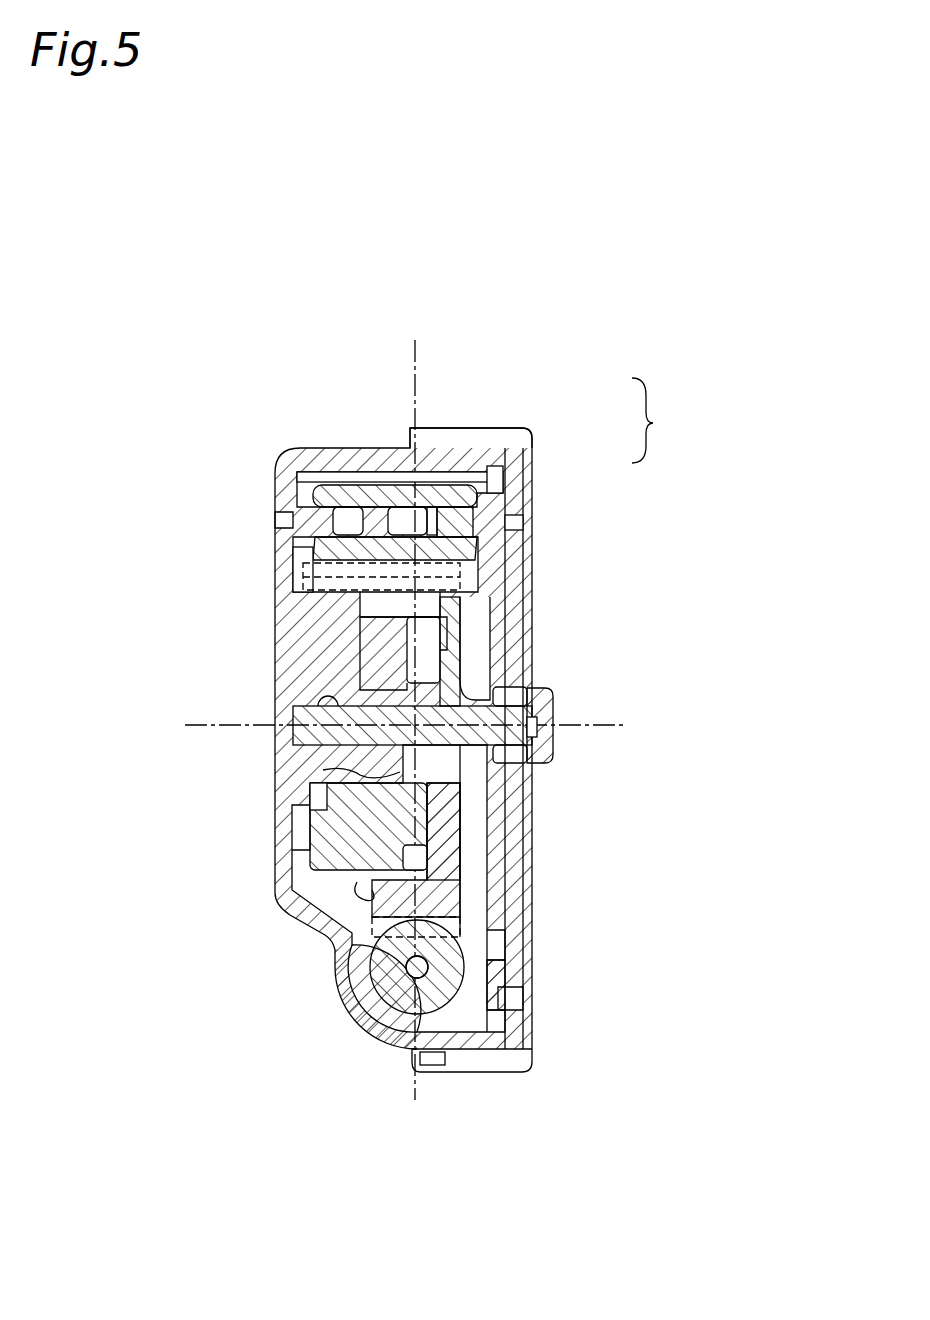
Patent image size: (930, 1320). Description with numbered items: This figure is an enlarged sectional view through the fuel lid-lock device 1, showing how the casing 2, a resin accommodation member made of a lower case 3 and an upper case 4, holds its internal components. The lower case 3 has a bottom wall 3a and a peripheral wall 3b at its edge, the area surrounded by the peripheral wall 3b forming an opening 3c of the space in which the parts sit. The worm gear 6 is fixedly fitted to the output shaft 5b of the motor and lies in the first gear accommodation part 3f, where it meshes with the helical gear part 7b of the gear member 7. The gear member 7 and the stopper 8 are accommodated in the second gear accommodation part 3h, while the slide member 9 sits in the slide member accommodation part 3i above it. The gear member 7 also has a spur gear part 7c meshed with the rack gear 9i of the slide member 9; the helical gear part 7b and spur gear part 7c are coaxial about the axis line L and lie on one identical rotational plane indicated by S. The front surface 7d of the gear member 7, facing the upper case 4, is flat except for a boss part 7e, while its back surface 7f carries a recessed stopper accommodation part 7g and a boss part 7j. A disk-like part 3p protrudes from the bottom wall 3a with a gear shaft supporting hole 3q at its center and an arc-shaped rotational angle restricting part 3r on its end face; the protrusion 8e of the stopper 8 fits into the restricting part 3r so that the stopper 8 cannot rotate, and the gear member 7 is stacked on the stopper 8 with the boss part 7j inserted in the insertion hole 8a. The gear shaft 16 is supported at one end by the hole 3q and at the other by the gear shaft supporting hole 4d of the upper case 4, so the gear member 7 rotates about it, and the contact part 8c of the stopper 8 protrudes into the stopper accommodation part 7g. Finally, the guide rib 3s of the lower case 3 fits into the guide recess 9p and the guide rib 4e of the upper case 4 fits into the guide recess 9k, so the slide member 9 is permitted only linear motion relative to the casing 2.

The fuel lid-lock device 1 is at (702, 256).
The casing 2 is at (654, 420).
The lower case 3 is at (495, 440).
The upper case 4 is at (527, 480).
The slide member accommodation part 3i is at (360, 460).
The guide recess 9k is at (405, 515).
The slide member 9 is at (298, 486).
The guide recess 9p is at (337, 513).
The guide rib 3s is at (318, 520).
The spur gear part 7c is at (310, 575).
The second gear accommodation part 3h is at (330, 583).
The insertion hole 8a is at (375, 635).
The disk-like part 3p is at (350, 667).
The gear shaft supporting hole 3q is at (327, 716).
The boss part 7j is at (355, 775).
The rotational angle restricting part 3r is at (318, 793).
The protrusion 8e is at (322, 828).
The stopper 8 is at (298, 856).
The bottom wall 3a is at (295, 905).
The helical gear part 7b is at (345, 940).
The worm gear 6 is at (407, 973).
The output shaft 5b is at (372, 993).
The first gear accommodation part 3f is at (403, 1023).
The peripheral wall 3b is at (483, 1050).
The opening 3c is at (490, 1010).
The back surface 7f is at (480, 945).
The stopper accommodation part 7g is at (360, 882).
The gear member 7 is at (464, 882).
The front surface 7d is at (472, 618).
The contact part 8c is at (427, 822).
The gear shaft supporting hole 4d is at (548, 752).
The gear shaft 16 is at (505, 710).
The boss part 7e is at (462, 668).
The rack gear 9i is at (440, 523).
The guide rib 4e is at (515, 520).
The axis line L is at (648, 725).
The rotational plane S is at (415, 1140).